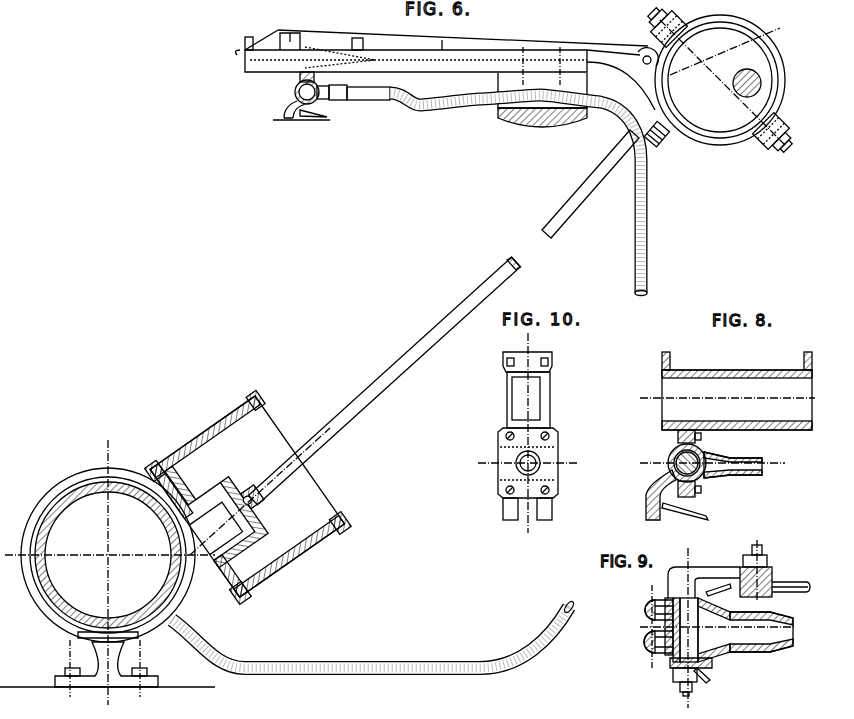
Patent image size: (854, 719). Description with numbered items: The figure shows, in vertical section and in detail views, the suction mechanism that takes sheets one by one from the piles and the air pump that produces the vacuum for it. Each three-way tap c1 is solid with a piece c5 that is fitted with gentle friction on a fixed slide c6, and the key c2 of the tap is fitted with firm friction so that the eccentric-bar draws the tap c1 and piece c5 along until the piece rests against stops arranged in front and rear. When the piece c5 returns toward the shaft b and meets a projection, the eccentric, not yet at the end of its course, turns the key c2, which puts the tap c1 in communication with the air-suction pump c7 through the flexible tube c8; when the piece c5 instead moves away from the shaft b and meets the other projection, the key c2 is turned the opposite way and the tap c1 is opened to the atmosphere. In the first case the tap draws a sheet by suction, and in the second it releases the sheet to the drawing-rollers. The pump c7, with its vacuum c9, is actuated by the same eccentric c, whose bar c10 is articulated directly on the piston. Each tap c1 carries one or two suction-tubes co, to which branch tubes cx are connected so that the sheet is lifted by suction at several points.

In FIG. 6, the eccentric c is at (670, 119).
In FIG. 6, the shaft b is at (747, 80).
In FIG. 6, the three-way tap c1 is at (301, 96).
In FIG. 10, the three-way tap c1 is at (545, 517).
In FIG. 8, the three-way tap c1 is at (743, 461).
In FIG. 9, the three-way tap c1 is at (739, 571).
In FIG. 6, the key c2 is at (451, 64).
In FIG. 10, the key c2 is at (528, 463).
In FIG. 8, the key c2 is at (712, 463).
In FIG. 9, the key c2 is at (700, 647).
In FIG. 6, the piece c5 is at (342, 44).
In FIG. 10, the piece c5 is at (520, 390).
In FIG. 8, the piece c5 is at (727, 391).
In FIG. 6, the fixed slide c6 is at (416, 87).
In FIG. 6, the air-suction pump c7 is at (248, 497).
In FIG. 6, the flexible tube c8 is at (418, 376).
In FIG. 9, the flexible tube c8 is at (761, 639).
In FIG. 6, the vacuum c9 is at (107, 572).
In FIG. 6, the bar c10 is at (385, 381).
In FIG. 6, the branch suction-tube cx is at (320, 112).
In FIG. 8, the branch suction-tube cx is at (696, 511).
In FIG. 9, the branch suction-tube cx is at (716, 638).
In FIG. 6, the suction-tube co is at (285, 110).
In FIG. 10, the suction-tube co is at (508, 517).
In FIG. 8, the suction-tube co is at (651, 495).
In FIG. 9, the suction-tube co is at (647, 624).